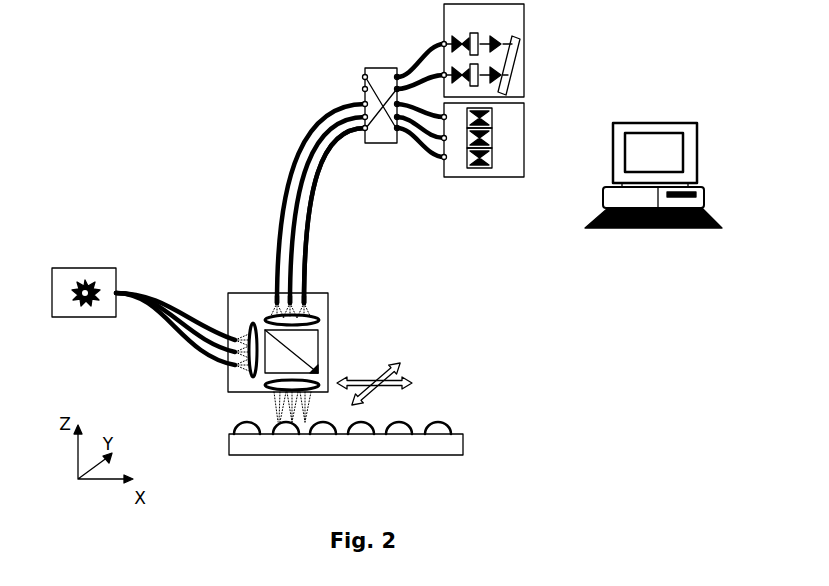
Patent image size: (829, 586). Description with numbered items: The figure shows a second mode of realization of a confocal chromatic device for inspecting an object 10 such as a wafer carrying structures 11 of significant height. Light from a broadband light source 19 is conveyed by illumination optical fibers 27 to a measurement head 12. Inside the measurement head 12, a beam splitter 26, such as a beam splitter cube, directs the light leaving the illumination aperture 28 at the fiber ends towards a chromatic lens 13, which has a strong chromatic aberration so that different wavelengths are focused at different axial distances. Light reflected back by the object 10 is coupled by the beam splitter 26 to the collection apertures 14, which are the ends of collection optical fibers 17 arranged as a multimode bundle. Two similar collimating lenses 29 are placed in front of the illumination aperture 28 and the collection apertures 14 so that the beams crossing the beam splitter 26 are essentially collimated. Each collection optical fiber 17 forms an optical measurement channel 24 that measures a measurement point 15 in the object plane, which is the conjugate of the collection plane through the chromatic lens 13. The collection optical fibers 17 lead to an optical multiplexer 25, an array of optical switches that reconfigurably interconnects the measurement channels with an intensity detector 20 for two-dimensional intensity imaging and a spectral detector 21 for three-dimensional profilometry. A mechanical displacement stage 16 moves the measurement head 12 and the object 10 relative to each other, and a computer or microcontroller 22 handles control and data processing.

The object 10 is at (463, 445).
The structures 11 is at (452, 428).
The measurement head 12 is at (228, 293).
The chromatic lens 13 is at (265, 388).
The collection aperture 14 is at (306, 303).
The measurement point 15 is at (305, 425).
The mechanical displacement stage 16 is at (400, 378).
The collection optical fiber 17 is at (280, 222).
The broadband light source 19 is at (85, 268).
The intensity detector 20 is at (524, 140).
The spectral detector 21 is at (524, 52).
The computer or microcontroller 22 is at (697, 155).
The optical measurement channel 24 is at (309, 250).
The optical multiplexer 25 is at (383, 68).
The beam splitter 26 is at (319, 355).
The illumination optical fibers 27 is at (182, 346).
The illumination aperture 28 is at (250, 328).
The collimating lenses 29 is at (322, 322).